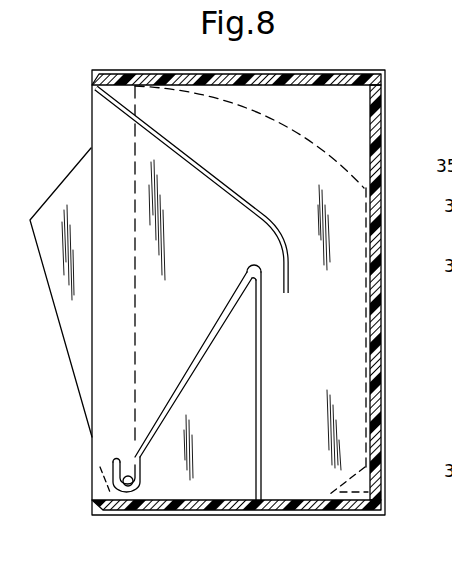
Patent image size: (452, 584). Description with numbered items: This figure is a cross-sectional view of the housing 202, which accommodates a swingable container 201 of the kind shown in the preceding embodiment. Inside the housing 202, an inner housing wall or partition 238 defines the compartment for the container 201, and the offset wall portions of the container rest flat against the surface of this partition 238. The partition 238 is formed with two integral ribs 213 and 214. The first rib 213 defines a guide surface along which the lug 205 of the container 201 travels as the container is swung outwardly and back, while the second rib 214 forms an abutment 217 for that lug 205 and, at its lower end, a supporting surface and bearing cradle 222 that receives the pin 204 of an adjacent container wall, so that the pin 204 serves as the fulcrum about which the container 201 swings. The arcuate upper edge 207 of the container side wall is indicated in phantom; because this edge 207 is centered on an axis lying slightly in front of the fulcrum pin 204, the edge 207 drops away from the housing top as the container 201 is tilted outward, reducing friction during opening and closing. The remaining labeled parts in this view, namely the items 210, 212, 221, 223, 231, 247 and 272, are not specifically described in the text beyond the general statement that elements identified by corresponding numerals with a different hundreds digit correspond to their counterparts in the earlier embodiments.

The container 201 is at (343, 366).
The housing 202 is at (387, 246).
The pin 204 is at (127, 474).
The lug 205 is at (364, 488).
The arcuate upper edge 207 is at (323, 148).
The bottom wall 210 is at (210, 510).
The top wall 212 is at (173, 74).
The rib 213 is at (217, 173).
The rib 214 is at (266, 401).
The abutment 217 is at (263, 284).
The inclined strut 221 is at (204, 338).
The bearing cradle 222 is at (128, 487).
The hook cap 223 is at (112, 463).
The flap 231 is at (54, 212).
The inner housing wall or partition 238 is at (150, 162).
The hinge portion 247 is at (97, 489).
The outer shell 272 is at (338, 71).